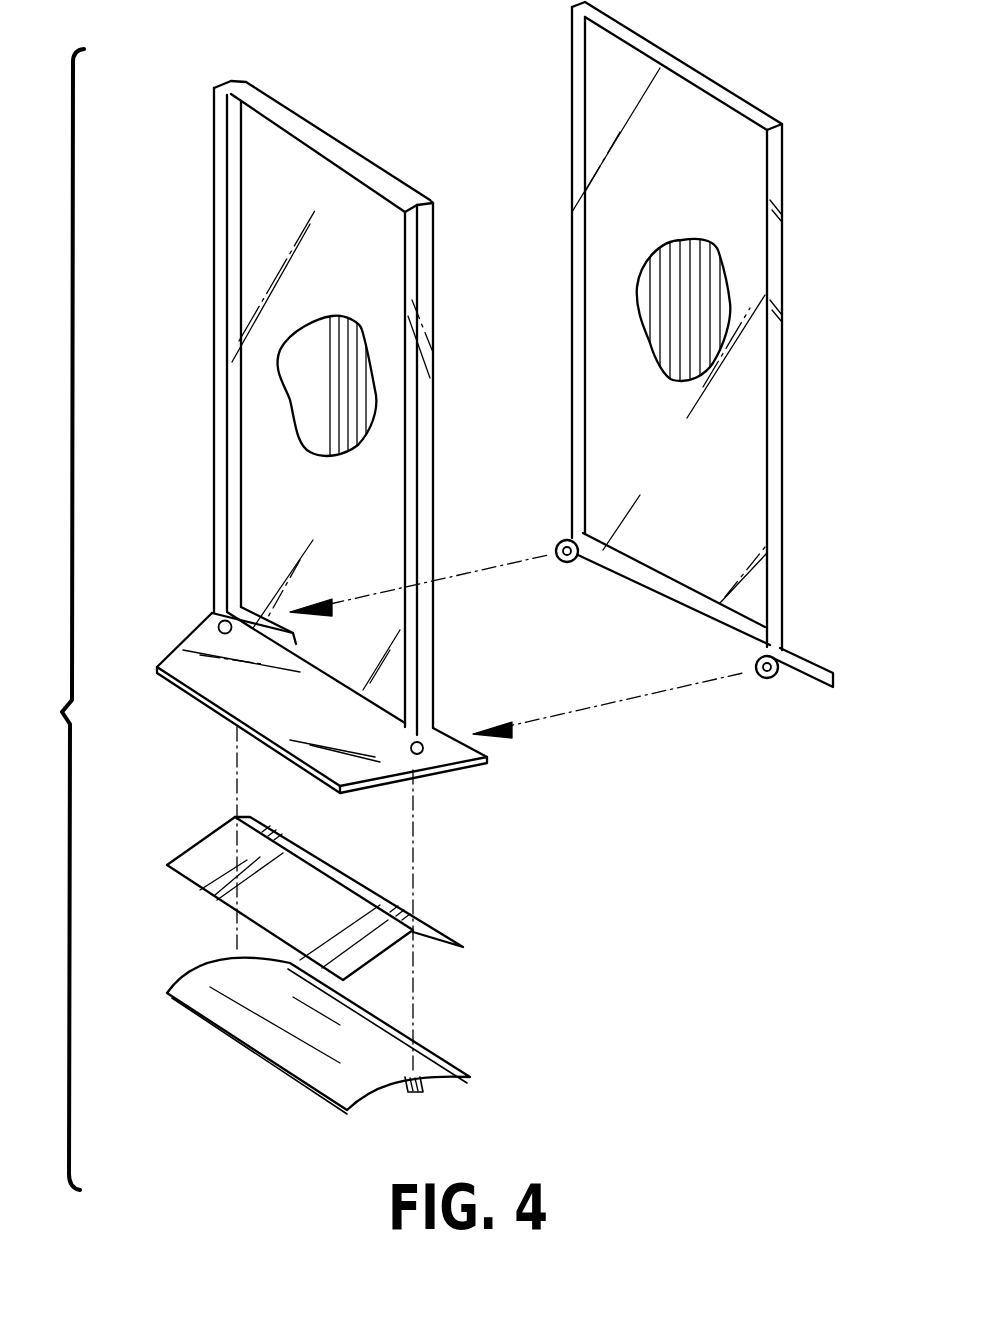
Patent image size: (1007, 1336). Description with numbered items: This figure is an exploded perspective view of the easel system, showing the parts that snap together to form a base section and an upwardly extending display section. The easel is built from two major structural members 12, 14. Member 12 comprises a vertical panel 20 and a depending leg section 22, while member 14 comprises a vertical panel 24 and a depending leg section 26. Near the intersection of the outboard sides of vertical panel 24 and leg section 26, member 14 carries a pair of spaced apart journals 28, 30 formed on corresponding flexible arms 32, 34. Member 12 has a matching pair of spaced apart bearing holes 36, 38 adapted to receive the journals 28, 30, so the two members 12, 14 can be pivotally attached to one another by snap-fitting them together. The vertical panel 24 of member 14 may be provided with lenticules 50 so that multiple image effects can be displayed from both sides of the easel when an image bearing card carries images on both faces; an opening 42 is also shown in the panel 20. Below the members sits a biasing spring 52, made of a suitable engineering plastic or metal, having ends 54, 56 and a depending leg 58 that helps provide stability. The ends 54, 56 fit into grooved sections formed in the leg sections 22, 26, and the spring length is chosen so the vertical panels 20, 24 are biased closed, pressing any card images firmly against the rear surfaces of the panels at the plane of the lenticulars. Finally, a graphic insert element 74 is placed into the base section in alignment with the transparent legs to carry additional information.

The structural member 12 is at (215, 318).
The structural member 14 is at (783, 400).
The vertical panel 20 is at (262, 215).
The leg section 22 is at (336, 733).
The vertical panel 24 is at (786, 150).
The leg section 26 is at (790, 647).
The journal 28 is at (562, 562).
The journal 30 is at (770, 675).
The flexible arm 32 is at (585, 556).
The flexible arm 34 is at (780, 668).
The bearing hole 36 is at (215, 620).
The bearing hole 38 is at (418, 754).
The opening in first side plate 42 is at (348, 406).
The lenticules 50 is at (678, 305).
The biasing spring 52 is at (340, 1065).
The end 54 is at (230, 1033).
The end 56 is at (430, 1047).
The depending leg 58 is at (423, 1090).
The graphic insert element 74 is at (430, 923).